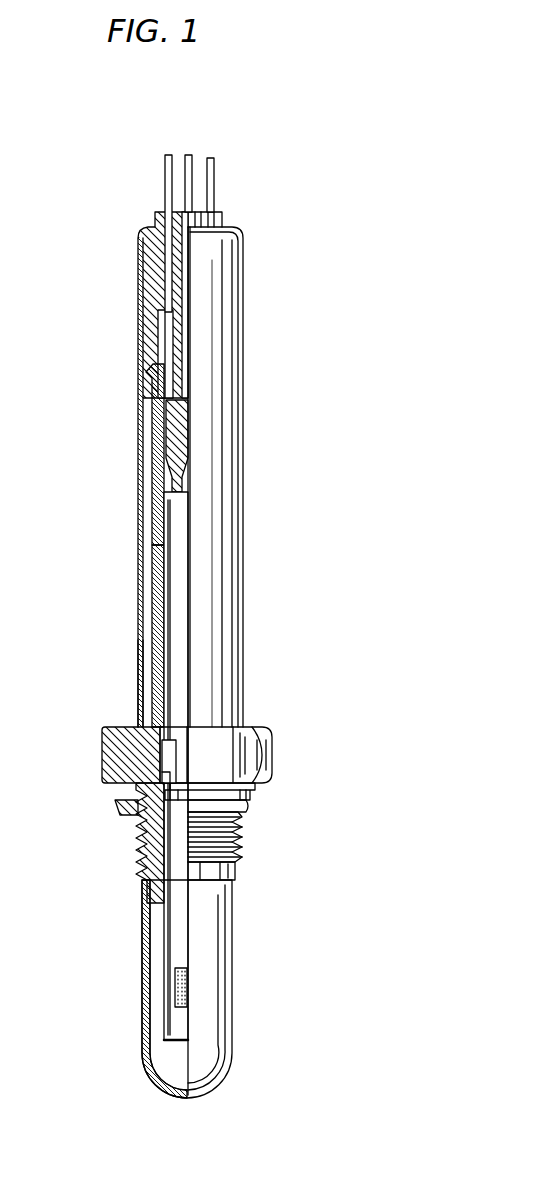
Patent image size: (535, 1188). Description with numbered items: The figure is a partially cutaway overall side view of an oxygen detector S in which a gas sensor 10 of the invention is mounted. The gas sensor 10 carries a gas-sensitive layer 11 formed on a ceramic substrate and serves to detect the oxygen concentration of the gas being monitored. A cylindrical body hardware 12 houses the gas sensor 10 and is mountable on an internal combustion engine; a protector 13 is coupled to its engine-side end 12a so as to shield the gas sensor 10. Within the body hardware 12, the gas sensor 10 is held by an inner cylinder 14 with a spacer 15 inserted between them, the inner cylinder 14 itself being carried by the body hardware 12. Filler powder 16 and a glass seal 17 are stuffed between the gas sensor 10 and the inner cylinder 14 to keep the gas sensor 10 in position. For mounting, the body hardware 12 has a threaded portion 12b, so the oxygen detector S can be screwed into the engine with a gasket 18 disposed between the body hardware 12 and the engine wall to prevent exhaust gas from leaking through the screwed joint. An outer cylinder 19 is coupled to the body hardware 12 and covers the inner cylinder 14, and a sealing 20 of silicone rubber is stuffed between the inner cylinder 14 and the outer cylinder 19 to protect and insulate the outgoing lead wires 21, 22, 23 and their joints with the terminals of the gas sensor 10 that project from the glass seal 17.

The oxygen detector S is at (252, 285).
The gas sensor 10 is at (176, 533).
The gas-sensitive layer 11 is at (177, 985).
The body hardware 12 is at (258, 760).
The engine-side end 12a is at (147, 890).
The threaded portion 12b is at (243, 822).
The protector 13 is at (220, 915).
The inner cylinder 14 is at (157, 500).
The spacer 15 is at (138, 727).
The filler powder 16 is at (157, 575).
The glass seal 17 is at (157, 465).
The gasket 18 is at (113, 808).
The outer cylinder 19 is at (213, 430).
The sealing 20 is at (148, 300).
The lead wire 21 is at (167, 167).
The lead wire 22 is at (190, 156).
The lead wire 23 is at (215, 183).